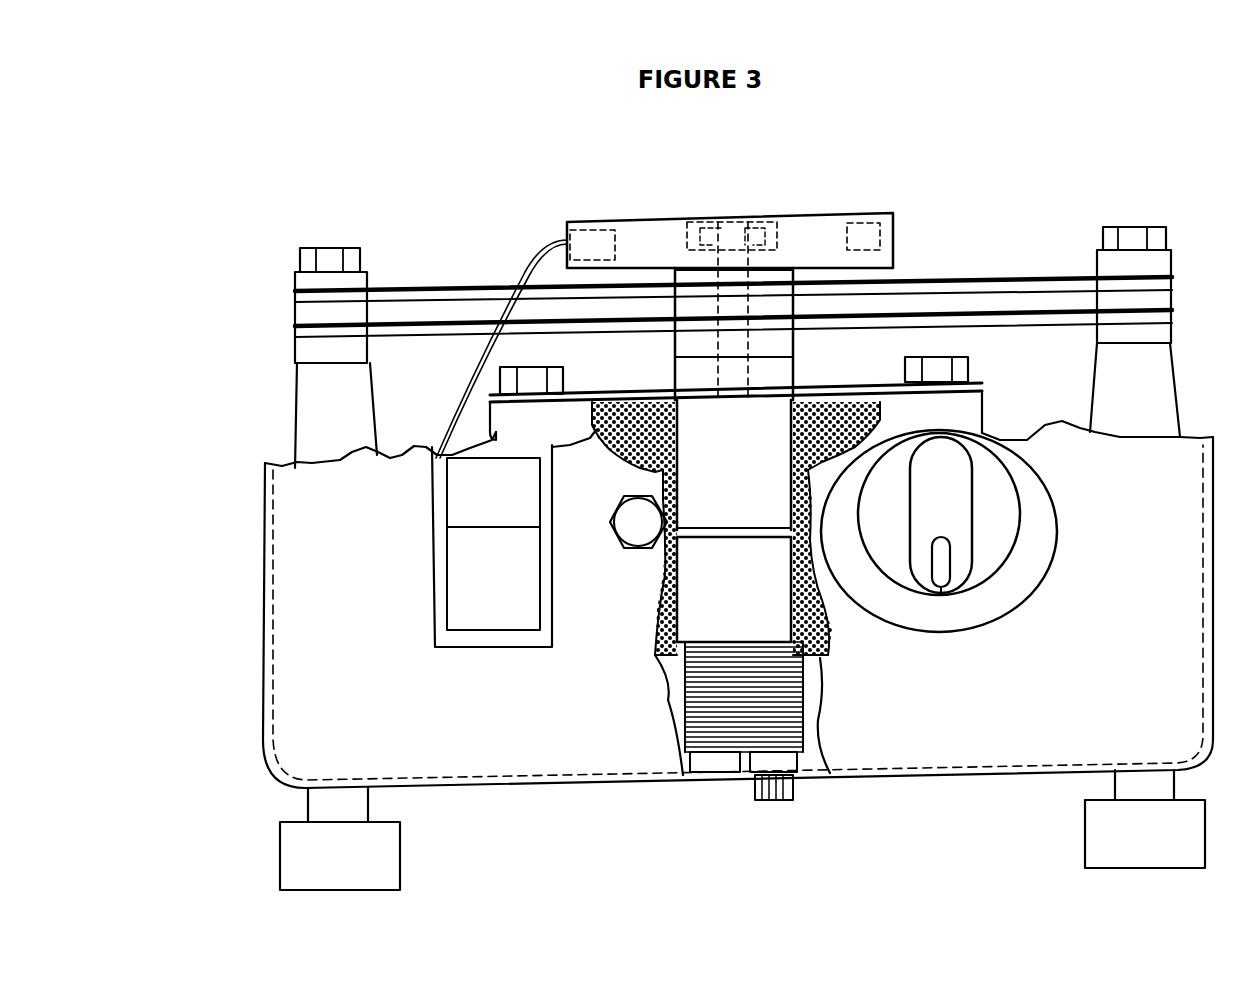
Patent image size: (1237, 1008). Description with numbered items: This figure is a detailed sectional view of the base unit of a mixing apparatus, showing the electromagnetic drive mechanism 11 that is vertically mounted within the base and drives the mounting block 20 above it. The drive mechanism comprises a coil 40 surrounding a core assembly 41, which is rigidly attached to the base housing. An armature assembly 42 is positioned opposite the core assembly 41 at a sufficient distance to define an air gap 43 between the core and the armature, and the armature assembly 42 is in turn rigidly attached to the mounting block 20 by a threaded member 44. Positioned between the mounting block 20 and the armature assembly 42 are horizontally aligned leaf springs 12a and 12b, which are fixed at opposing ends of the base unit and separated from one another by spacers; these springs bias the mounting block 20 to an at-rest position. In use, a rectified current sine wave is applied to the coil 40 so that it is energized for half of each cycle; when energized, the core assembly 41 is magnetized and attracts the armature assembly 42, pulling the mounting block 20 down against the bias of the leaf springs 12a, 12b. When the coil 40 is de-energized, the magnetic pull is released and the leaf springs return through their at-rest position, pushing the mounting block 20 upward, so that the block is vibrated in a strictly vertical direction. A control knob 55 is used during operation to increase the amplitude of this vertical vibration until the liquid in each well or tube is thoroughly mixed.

The electromagnetic drive mechanism 11 is at (293, 403).
The leaf spring 12a is at (398, 297).
The leaf spring 12b is at (458, 328).
The mounting block 20 is at (895, 243).
The coil 40 is at (838, 405).
The core assembly 41 is at (700, 602).
The armature assembly 42 is at (703, 422).
The air gap 43 is at (822, 570).
The threaded member 44 is at (735, 235).
The control knob 55 is at (1020, 573).